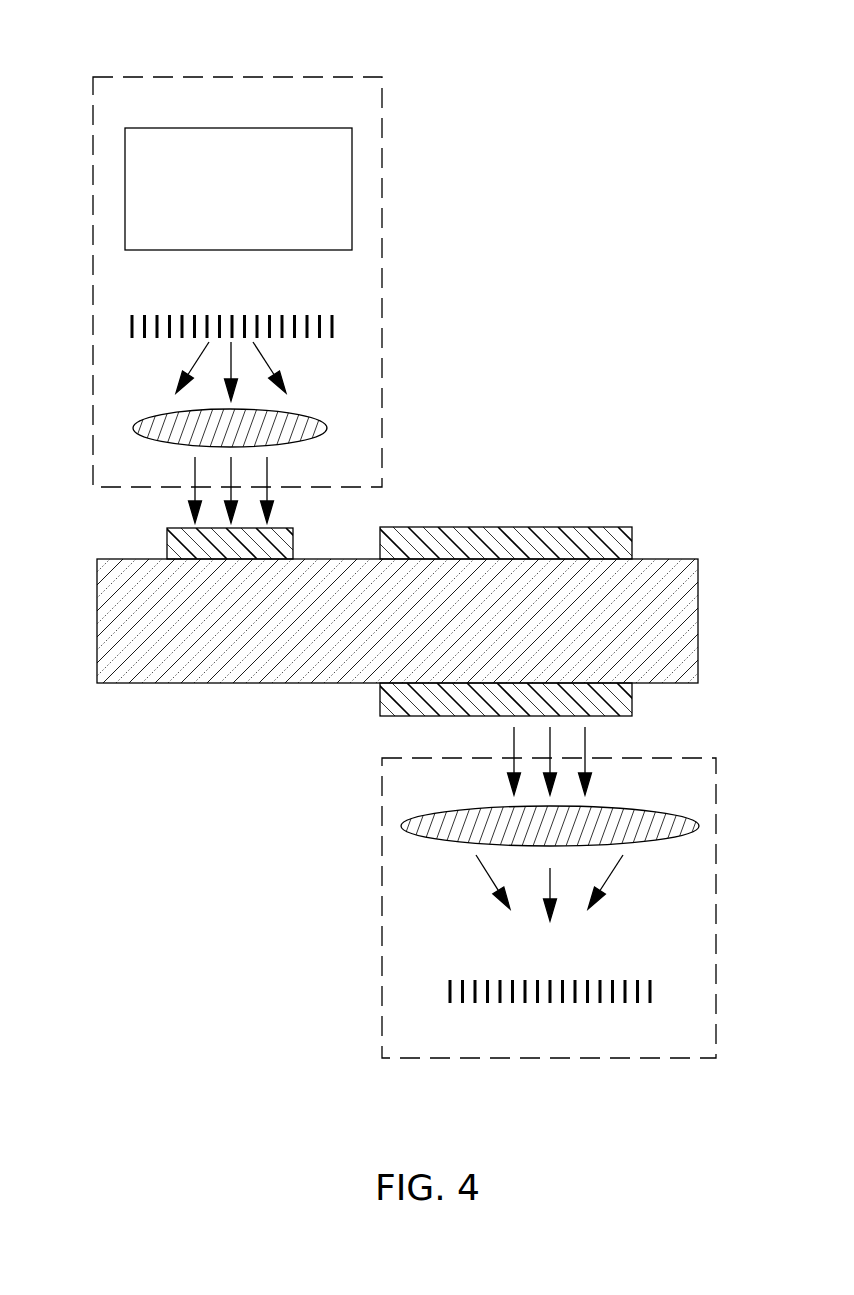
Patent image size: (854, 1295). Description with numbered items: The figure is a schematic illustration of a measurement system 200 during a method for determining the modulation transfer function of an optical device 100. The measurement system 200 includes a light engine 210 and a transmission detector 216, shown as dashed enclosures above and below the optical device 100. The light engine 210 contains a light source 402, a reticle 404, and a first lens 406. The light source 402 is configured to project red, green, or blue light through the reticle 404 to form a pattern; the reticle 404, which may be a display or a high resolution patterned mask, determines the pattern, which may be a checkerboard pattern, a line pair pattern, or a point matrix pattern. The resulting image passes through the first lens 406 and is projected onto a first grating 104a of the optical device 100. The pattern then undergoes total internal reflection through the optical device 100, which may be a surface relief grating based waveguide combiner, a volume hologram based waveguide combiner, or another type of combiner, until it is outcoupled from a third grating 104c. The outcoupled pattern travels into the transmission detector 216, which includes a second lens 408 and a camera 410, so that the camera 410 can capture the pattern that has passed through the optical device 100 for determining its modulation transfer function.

The measurement system 200 is at (666, 48).
The light engine 210 is at (382, 118).
The light source 402 is at (255, 197).
The reticle 404 is at (340, 325).
The first lens 406 is at (327, 428).
The first grating 104a is at (167, 548).
The third grating 104c is at (632, 532).
The optical device 100 is at (698, 617).
The transmission detector 216 is at (716, 893).
The second lens 408 is at (699, 826).
The camera 410 is at (655, 990).